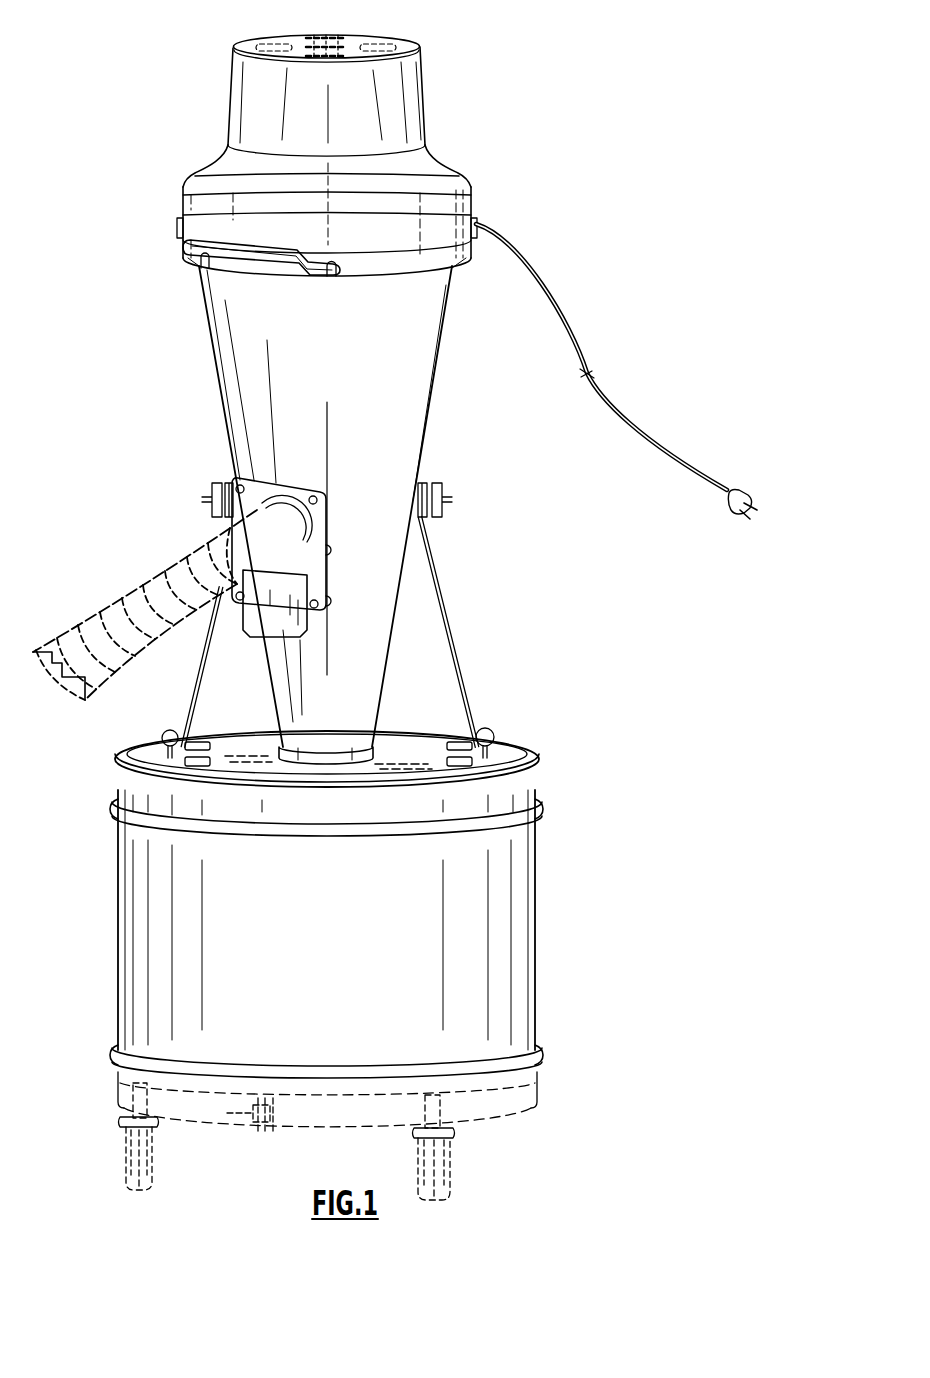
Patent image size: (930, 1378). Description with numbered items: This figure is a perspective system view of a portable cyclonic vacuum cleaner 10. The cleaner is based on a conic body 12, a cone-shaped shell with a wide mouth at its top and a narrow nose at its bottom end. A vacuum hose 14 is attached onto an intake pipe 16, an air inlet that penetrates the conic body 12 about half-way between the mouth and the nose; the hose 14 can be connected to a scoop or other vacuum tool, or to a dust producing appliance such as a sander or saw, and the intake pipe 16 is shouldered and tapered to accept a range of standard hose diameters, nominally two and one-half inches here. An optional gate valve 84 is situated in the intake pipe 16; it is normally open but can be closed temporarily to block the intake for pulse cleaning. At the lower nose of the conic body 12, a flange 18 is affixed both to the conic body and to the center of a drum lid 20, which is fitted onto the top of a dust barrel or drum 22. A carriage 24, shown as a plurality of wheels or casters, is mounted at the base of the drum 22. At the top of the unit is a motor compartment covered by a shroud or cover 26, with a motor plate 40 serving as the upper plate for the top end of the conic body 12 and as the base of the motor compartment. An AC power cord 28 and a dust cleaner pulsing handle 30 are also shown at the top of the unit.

The portable cyclonic vacuum cleaner 10 is at (642, 613).
The conic body 12 is at (147, 262).
The vacuum hose 14 is at (150, 582).
The intake pipe 16 is at (298, 495).
The flange 18 is at (378, 750).
The drum lid 20 is at (424, 757).
The drum 22 is at (543, 928).
The carriage 24 is at (215, 1233).
The cover 26 is at (461, 172).
The AC power cord 28 is at (565, 327).
The dust cleaner pulsing handle 30 is at (185, 252).
The motor plate 40 is at (452, 272).
The gate valve 84 is at (312, 590).